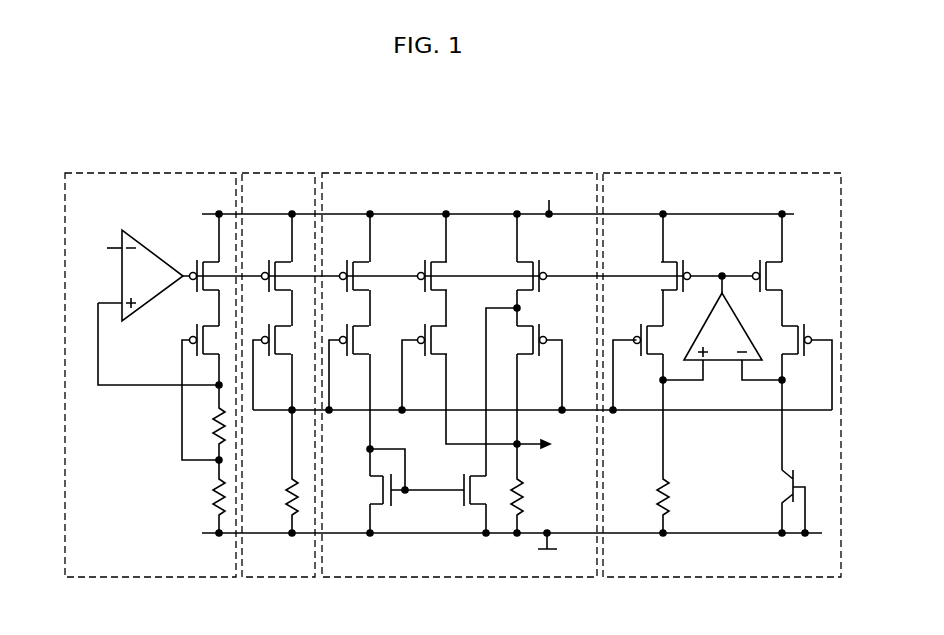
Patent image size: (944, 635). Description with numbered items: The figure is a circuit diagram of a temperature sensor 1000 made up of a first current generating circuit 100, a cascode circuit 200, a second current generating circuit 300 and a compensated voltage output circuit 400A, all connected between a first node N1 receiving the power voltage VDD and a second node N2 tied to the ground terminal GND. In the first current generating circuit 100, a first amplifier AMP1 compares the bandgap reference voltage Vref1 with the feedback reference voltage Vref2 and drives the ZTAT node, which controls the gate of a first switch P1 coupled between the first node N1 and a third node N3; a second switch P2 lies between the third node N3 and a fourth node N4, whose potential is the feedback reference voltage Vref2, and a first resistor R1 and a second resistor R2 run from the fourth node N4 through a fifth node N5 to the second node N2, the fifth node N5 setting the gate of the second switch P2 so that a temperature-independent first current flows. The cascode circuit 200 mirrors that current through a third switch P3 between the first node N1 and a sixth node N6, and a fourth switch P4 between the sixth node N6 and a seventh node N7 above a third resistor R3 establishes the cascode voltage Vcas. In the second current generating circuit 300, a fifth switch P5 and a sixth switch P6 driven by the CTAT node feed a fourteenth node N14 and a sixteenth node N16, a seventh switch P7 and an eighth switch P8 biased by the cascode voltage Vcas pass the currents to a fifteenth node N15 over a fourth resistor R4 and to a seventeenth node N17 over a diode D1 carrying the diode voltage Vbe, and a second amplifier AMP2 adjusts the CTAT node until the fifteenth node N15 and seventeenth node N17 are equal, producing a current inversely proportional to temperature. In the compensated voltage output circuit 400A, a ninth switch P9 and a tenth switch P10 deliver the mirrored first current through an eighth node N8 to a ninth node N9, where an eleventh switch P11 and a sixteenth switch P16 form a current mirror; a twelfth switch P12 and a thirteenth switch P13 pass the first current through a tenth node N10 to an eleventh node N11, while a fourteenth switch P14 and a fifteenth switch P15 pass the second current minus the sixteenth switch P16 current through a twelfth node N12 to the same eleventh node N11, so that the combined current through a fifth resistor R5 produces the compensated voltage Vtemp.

The temperature sensor 1000 is at (745, 120).
The first current generating circuit 100 is at (177, 173).
The cascode circuit 200 is at (279, 173).
The compensated voltage output circuit 400A is at (461, 173).
The second current generating circuit 300 is at (688, 173).
The first node N1 is at (412, 213).
The second node N2 is at (413, 535).
The third node N3 is at (219, 305).
The fourth node N4 is at (219, 363).
The fifth node N5 is at (182, 440).
The sixth node N6 is at (292, 305).
The seventh node N7 is at (295, 406).
The eighth node N8 is at (371, 305).
The ninth node N9 is at (370, 382).
The tenth node N10 is at (447, 317).
The eleventh node N11 is at (446, 382).
The twelfth node N12 is at (493, 307).
The fourteenth node N14 is at (663, 300).
The fifteenth node N15 is at (663, 372).
The sixteenth node N16 is at (783, 300).
The seventeenth node N17 is at (783, 372).
The first switch P1 is at (205, 253).
The second switch P2 is at (209, 340).
The third switch P3 is at (275, 253).
The fourth switch P4 is at (278, 367).
The fifth switch P5 is at (667, 253).
The sixth switch P6 is at (774, 253).
The seventh switch P7 is at (645, 367).
The eighth switch P8 is at (797, 367).
The ninth switch P9 is at (355, 253).
The tenth switch P10 is at (354, 368).
The eleventh switch P11 is at (407, 491).
The twelfth switch P12 is at (432, 253).
The thirteenth switch P13 is at (429, 368).
The fourteenth switch P14 is at (532, 253).
The fifteenth switch P15 is at (534, 368).
The sixteenth switch P16 is at (483, 503).
The first resistor R1 is at (205, 432).
The second resistor R2 is at (205, 496).
The third resistor R3 is at (278, 471).
The fourth resistor R4 is at (676, 456).
The fifth resistor R5 is at (533, 504).
The diode D1 is at (786, 501).
The first amplifier AMP1 is at (152, 275).
The second amplifier AMP2 is at (723, 326).
The power voltage VDD is at (549, 195).
The ground terminal GND is at (547, 553).
The bandgap reference voltage Vref1 is at (97, 248).
The feedback reference voltage Vref2 is at (160, 345).
The compensated voltage Vtemp is at (553, 415).
The cascode voltage Vcas is at (542, 423).
The diode voltage Vbe is at (796, 425).
The ZTAT node ZTAT is at (468, 266).
The CTAT node CTAT is at (720, 270).